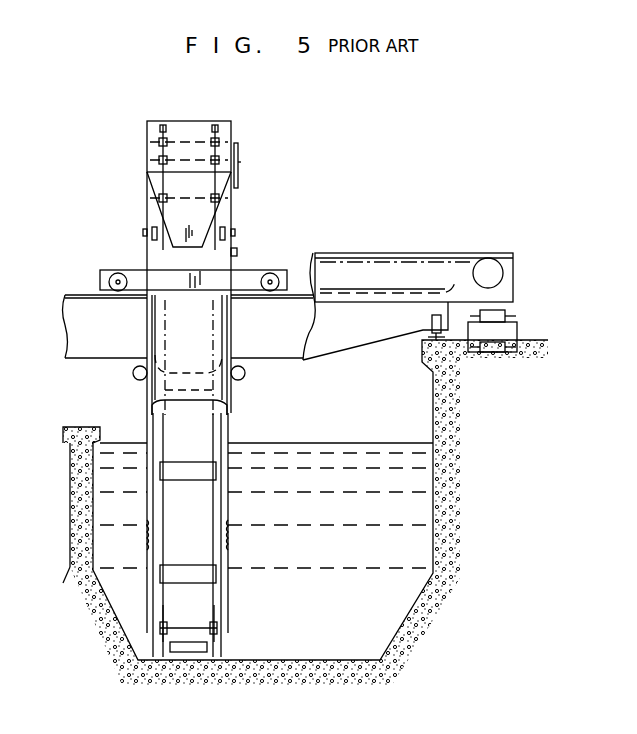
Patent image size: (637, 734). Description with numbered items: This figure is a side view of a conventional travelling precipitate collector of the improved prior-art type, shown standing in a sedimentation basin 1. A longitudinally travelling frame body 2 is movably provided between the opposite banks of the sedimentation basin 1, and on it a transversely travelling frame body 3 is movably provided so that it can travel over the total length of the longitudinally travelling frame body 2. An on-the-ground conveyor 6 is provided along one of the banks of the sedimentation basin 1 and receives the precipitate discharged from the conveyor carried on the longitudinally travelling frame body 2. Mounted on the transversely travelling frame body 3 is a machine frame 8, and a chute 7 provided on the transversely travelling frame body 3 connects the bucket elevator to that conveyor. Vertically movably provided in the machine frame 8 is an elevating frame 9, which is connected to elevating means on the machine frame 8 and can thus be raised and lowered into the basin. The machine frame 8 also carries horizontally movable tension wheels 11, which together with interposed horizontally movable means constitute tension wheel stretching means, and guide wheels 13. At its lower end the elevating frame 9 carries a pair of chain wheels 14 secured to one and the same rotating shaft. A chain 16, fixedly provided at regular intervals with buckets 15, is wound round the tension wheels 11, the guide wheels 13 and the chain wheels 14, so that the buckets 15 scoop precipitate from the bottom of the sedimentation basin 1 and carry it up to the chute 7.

The sedimentation basin 1 is at (403, 580).
The longitudinally travelling frame body 2 is at (80, 353).
The transversely travelling frame body 3 is at (138, 273).
The on-the-ground conveyor 6 is at (517, 328).
The chute 7 is at (175, 221).
The machine frame 8 is at (173, 328).
The elevating frame 9 is at (160, 482).
The tension wheels 11 is at (149, 127).
The guide wheels 13 is at (150, 164).
The chain wheels 14 is at (163, 640).
The buckets 15 is at (185, 653).
The chain 16 is at (160, 556).